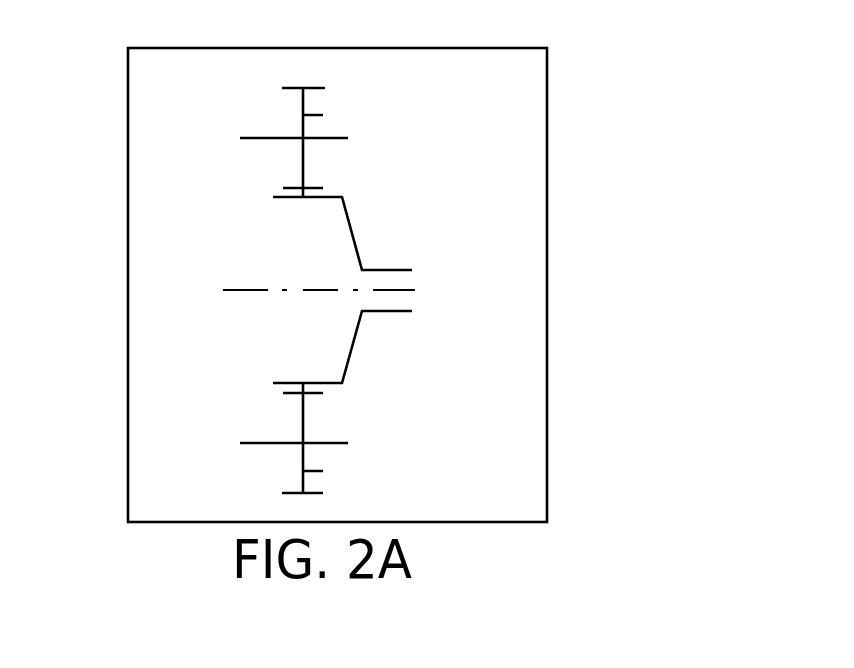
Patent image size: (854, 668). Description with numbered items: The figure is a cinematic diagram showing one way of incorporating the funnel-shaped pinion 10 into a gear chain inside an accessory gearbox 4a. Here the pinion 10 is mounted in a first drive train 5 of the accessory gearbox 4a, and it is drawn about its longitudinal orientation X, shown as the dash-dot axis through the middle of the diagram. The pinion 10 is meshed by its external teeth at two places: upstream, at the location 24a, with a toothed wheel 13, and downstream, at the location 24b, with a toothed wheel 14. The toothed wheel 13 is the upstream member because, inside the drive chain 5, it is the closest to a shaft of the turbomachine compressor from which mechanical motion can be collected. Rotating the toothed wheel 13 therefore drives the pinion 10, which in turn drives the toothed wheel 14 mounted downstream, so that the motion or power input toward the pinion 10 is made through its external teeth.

The accessory gearbox 4a is at (128, 190).
The first drive train 5 is at (359, 74).
The longitudinal orientation X is at (237, 290).
The toothed wheel 13 is at (305, 113).
The upstream meshing of external teeth 24a is at (311, 189).
The pinion 10 is at (353, 235).
The downstream meshing of external teeth 24b is at (310, 394).
The toothed wheel 14 is at (305, 471).